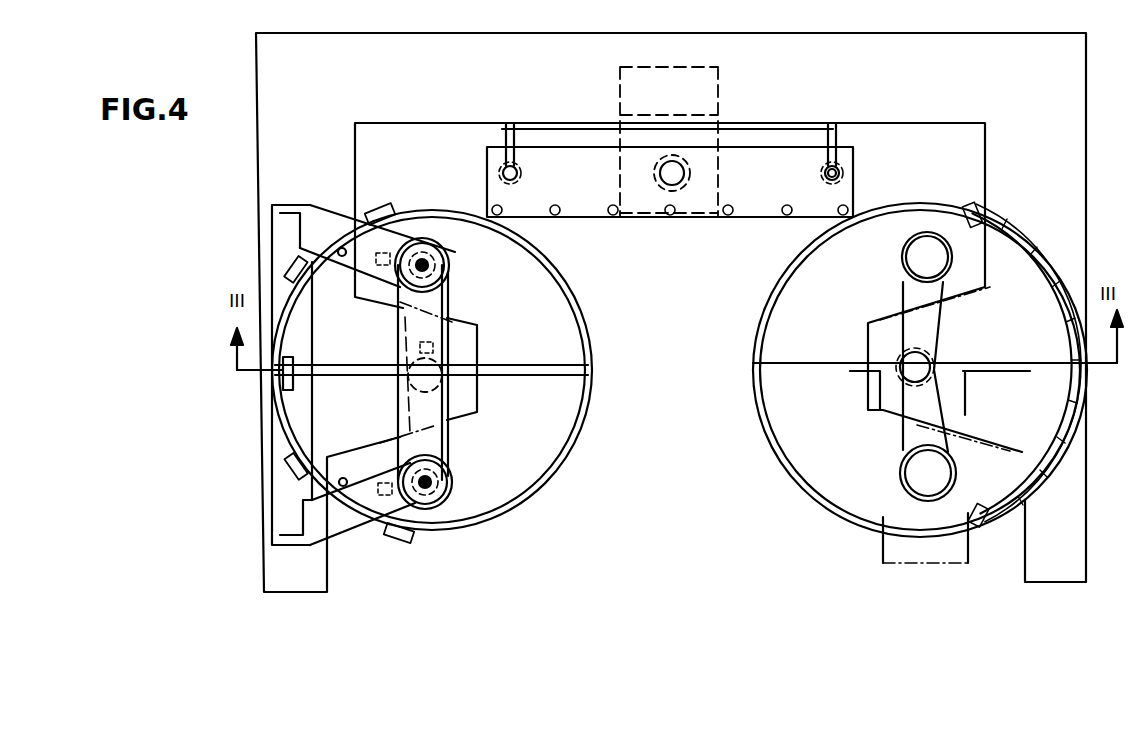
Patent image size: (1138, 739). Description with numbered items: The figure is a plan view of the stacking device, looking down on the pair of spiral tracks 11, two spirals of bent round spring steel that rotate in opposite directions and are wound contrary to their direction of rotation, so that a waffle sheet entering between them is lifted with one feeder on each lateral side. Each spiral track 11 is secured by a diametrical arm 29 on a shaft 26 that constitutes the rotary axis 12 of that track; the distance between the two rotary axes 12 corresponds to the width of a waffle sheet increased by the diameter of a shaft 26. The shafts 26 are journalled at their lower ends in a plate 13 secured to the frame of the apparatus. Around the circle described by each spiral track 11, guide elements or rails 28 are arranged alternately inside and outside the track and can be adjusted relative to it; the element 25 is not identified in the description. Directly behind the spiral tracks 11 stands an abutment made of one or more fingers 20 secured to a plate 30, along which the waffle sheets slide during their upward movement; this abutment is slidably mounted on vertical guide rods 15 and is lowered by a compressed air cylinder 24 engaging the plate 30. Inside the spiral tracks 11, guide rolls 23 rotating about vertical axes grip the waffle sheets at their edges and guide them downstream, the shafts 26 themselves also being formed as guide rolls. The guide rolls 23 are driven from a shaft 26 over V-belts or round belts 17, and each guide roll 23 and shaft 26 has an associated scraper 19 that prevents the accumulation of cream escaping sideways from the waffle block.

The spiral track 11 is at (535, 492).
The rotary axis 12 is at (915, 365).
The plate 13 is at (1052, 517).
The vertical guide rods 15 is at (822, 172).
The V-belts or round belts 17 is at (900, 438).
The scraper 19 is at (433, 345).
The fingers 20 is at (782, 217).
The guide rolls 23 is at (910, 255).
The compressed air cylinder 24 is at (660, 177).
The guide rail 25 is at (1053, 337).
The shaft 26 is at (432, 380).
The guide elements or rails 28 is at (341, 249).
The diametrical arm 29 is at (793, 372).
The plate 30 is at (843, 193).